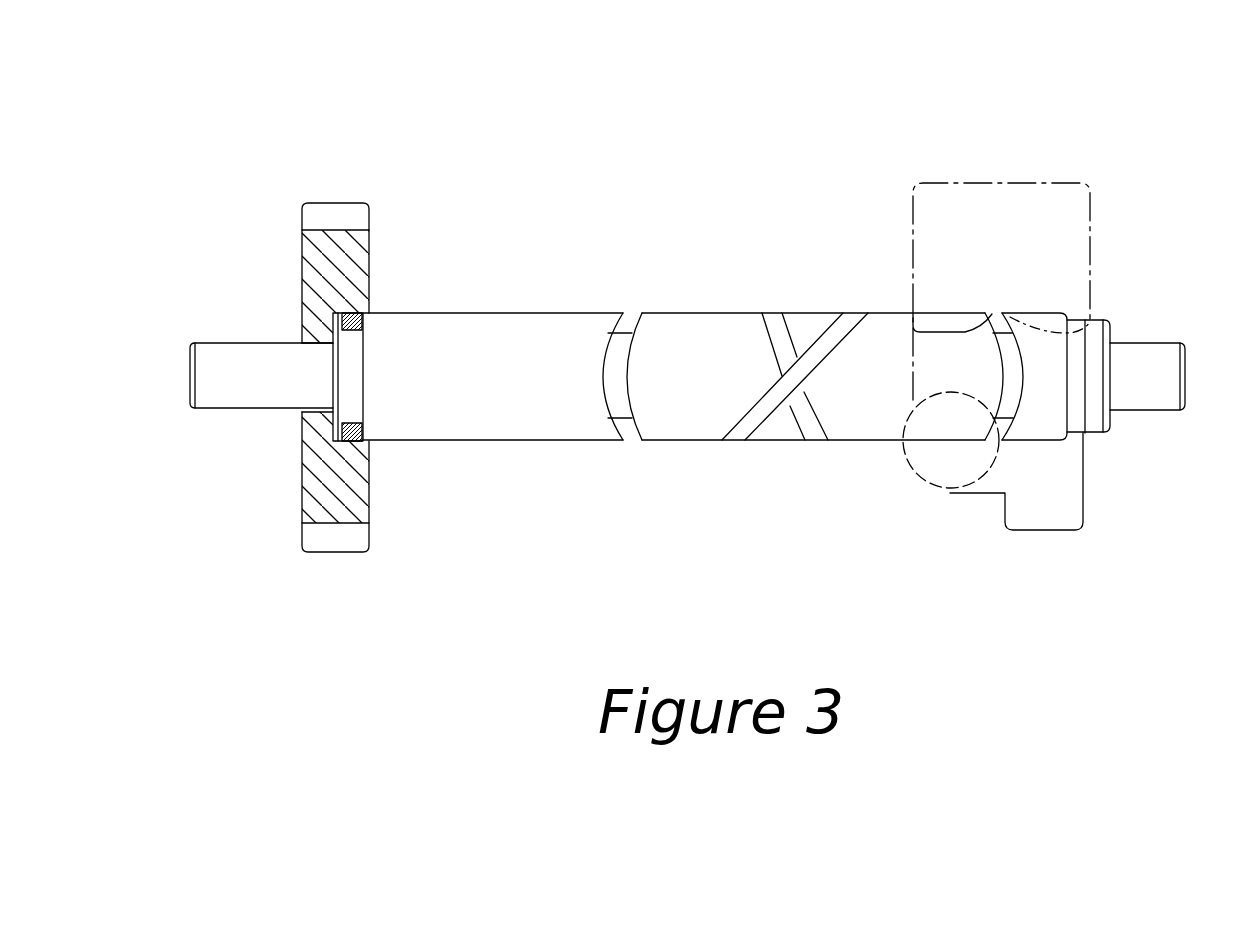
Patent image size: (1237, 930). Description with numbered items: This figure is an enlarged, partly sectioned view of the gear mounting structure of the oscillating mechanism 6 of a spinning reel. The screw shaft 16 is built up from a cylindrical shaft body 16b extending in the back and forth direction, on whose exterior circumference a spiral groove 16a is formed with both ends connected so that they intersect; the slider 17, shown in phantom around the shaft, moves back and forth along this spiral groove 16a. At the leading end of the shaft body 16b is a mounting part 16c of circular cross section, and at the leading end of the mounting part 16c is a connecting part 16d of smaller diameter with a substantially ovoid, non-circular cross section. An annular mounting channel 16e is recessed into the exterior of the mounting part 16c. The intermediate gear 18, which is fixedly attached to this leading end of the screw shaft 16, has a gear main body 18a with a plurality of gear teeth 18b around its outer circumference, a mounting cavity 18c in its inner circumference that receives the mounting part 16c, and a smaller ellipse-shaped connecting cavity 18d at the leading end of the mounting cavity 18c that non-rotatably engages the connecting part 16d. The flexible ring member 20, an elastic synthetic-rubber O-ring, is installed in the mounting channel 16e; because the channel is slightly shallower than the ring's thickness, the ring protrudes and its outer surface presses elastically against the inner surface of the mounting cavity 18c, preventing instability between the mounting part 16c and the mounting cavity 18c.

The oscillating mechanism 6 is at (676, 172).
The screw shaft 16 is at (763, 282).
The spiral groove 16a is at (800, 418).
The shaft body 16b is at (678, 433).
The mounting part 16c is at (347, 403).
The connecting part 16d is at (318, 392).
The mounting channel 16e is at (363, 313).
The slider 17 is at (1003, 183).
The intermediate gear 18 is at (336, 147).
The gear main body 18a is at (307, 283).
The gear teeth 18b is at (323, 210).
The mounting cavity 18c is at (365, 441).
The connecting cavity 18d is at (313, 347).
The flexible ring member 20 is at (357, 312).